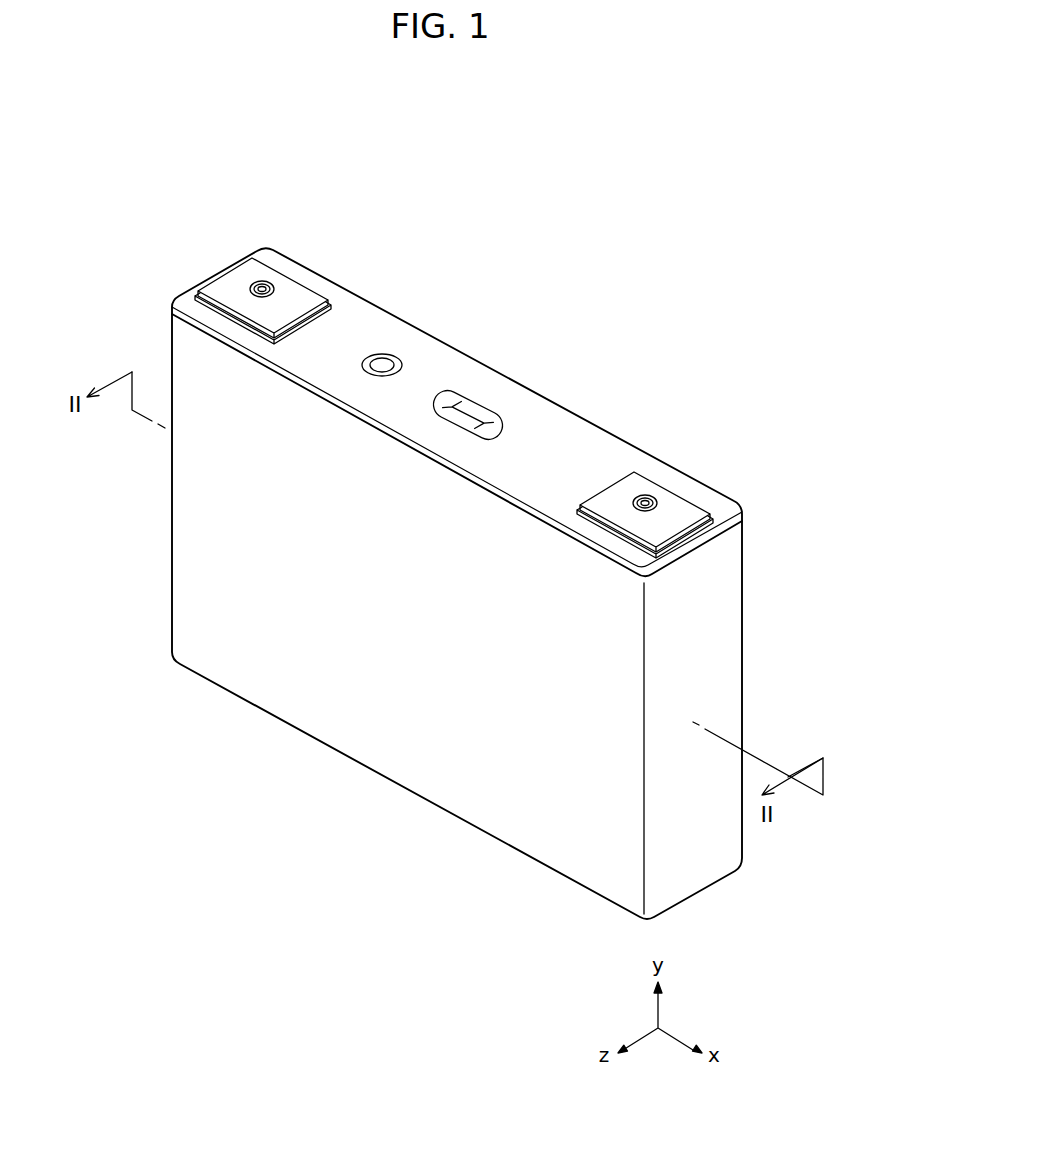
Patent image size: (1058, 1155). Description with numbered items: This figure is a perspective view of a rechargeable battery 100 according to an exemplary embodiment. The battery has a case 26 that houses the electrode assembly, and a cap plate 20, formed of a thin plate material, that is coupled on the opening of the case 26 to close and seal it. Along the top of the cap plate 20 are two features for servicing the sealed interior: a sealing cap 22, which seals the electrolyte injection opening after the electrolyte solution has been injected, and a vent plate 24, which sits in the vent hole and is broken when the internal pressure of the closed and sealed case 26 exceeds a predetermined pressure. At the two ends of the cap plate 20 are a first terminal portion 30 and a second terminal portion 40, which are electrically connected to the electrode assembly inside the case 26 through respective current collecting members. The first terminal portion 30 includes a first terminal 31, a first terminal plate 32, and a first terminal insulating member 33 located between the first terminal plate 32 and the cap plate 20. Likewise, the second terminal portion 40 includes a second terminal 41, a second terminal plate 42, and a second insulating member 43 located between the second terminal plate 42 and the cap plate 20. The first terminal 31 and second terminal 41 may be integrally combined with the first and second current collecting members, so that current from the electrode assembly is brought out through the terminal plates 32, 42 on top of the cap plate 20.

The rechargeable battery 100 is at (565, 258).
The cap plate 20 is at (555, 423).
The sealing cap 22 is at (384, 362).
The vent plate 24 is at (473, 408).
The case 26 is at (383, 743).
The first terminal portion 30 is at (383, 224).
The first terminal 31 is at (268, 284).
The first terminal plate 32 is at (293, 293).
The first terminal insulating member 33 is at (320, 305).
The second terminal portion 40 is at (766, 438).
The second terminal 41 is at (657, 497).
The second terminal plate 42 is at (680, 505).
The second insulating member 43 is at (707, 513).